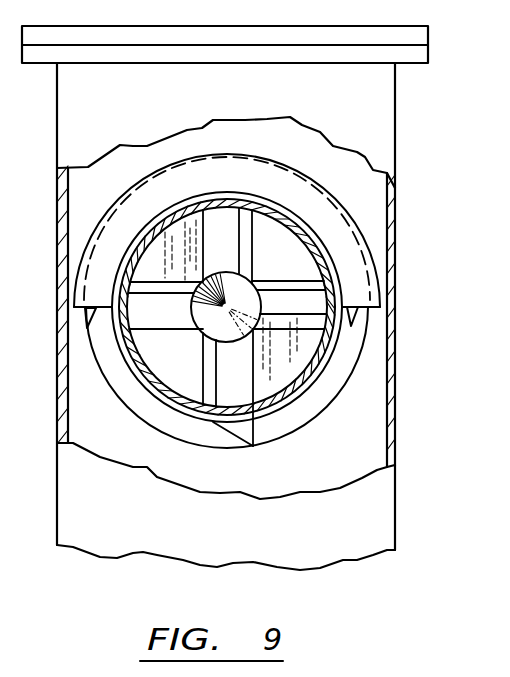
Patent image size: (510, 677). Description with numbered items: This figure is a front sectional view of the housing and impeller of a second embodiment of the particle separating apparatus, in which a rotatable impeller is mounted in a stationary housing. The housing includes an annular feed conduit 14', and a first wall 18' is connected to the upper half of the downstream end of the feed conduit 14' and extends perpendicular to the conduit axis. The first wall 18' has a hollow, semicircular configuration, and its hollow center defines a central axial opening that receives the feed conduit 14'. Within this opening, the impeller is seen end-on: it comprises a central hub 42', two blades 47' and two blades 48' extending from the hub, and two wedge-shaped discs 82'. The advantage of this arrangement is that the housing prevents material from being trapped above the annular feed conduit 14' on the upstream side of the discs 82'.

The annular feed conduit 14' is at (225, 298).
The first wall 18' is at (227, 286).
The central hub 42' is at (202, 317).
The blades 47' is at (270, 403).
The blades 48' is at (227, 294).
The wedge-shaped discs 82' is at (290, 307).